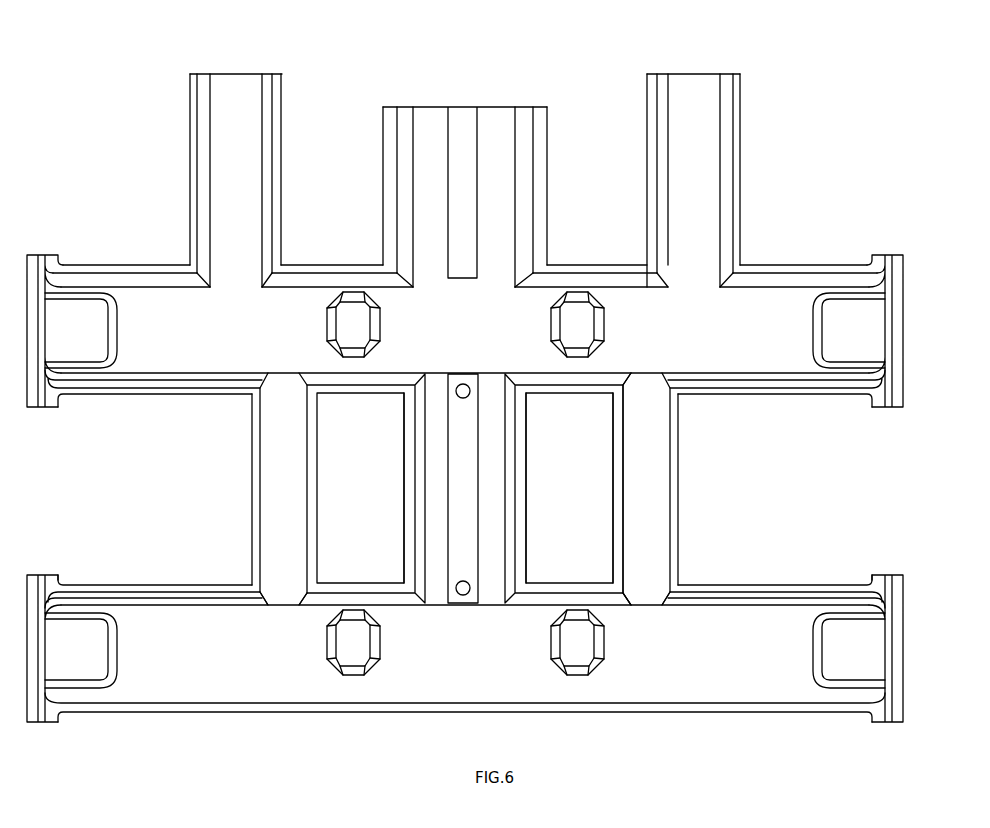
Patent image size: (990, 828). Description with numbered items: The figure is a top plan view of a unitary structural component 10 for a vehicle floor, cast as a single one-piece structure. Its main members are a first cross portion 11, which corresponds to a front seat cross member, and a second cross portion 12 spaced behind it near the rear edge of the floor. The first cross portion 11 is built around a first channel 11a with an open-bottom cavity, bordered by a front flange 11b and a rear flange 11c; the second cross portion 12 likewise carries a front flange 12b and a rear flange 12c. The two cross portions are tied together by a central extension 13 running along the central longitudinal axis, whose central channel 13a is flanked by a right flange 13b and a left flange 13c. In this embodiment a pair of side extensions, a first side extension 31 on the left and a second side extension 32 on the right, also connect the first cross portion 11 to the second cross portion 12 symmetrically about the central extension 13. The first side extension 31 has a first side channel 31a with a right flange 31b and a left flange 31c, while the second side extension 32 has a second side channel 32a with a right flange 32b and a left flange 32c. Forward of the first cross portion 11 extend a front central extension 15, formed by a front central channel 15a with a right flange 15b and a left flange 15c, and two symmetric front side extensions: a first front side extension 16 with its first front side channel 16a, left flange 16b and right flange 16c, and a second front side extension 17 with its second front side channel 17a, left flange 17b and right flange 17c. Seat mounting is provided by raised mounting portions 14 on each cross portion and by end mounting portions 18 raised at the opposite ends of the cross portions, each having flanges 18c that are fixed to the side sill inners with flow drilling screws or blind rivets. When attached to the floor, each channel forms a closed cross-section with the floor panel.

The unitary structural component 10 is at (52, 112).
The first cross portion 11 is at (770, 252).
The first channel 11a is at (636, 300).
The front flange 11b is at (125, 272).
The rear flange 11c is at (187, 393).
The second cross portion 12 is at (783, 562).
The front flange 12b is at (128, 583).
The rear flange 12c is at (465, 712).
The central extension 13 is at (533, 480).
The central channel 13a is at (492, 519).
The right flange 13b is at (408, 520).
The left flange 13c is at (520, 545).
The mounting portion 14 is at (318, 323).
The front central extension 15 is at (452, 92).
The front central channel 15a is at (493, 148).
The right flange 15b is at (384, 188).
The left flange 15c is at (540, 183).
The first front side extension 16 is at (238, 58).
The first front side channel 16a is at (250, 95).
The left flange 16b is at (192, 158).
The right flange 16c is at (277, 143).
The second front side extension 17 is at (680, 58).
The second front side channel 17a is at (702, 92).
The left flange 17b is at (650, 136).
The right flange 17c is at (735, 142).
The end mounting portion 18 is at (135, 327).
The flange 18c is at (897, 322).
The first side extension 31 is at (237, 472).
The first side channel 31a is at (322, 500).
The right flange 31b is at (252, 512).
The left flange 31c is at (318, 465).
The second side extension 32 is at (700, 480).
The second side channel 32a is at (658, 521).
The right flange 32b is at (614, 446).
The left flange 32c is at (674, 537).